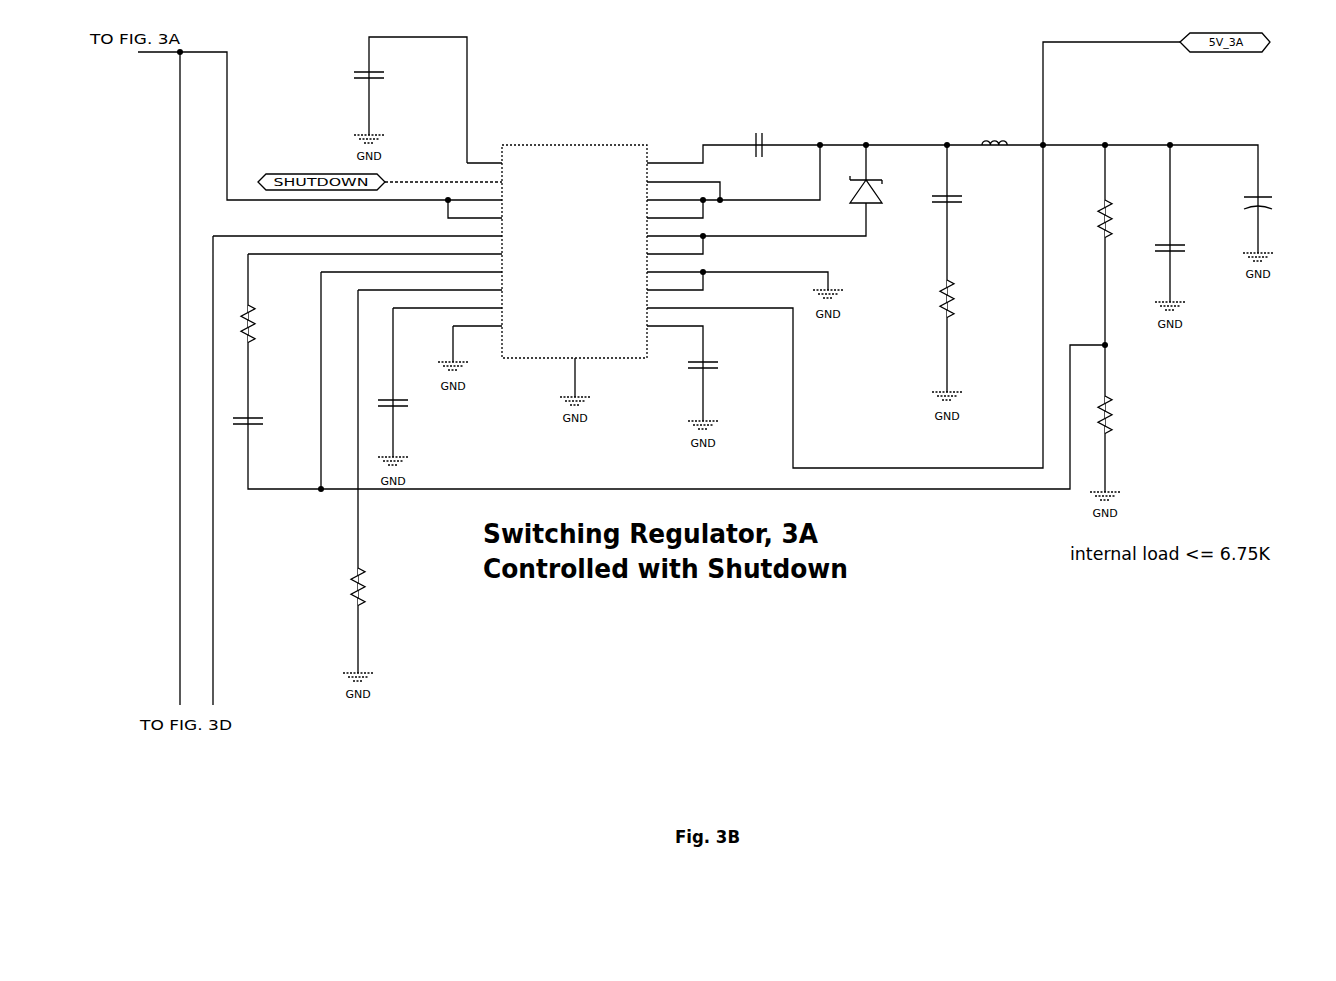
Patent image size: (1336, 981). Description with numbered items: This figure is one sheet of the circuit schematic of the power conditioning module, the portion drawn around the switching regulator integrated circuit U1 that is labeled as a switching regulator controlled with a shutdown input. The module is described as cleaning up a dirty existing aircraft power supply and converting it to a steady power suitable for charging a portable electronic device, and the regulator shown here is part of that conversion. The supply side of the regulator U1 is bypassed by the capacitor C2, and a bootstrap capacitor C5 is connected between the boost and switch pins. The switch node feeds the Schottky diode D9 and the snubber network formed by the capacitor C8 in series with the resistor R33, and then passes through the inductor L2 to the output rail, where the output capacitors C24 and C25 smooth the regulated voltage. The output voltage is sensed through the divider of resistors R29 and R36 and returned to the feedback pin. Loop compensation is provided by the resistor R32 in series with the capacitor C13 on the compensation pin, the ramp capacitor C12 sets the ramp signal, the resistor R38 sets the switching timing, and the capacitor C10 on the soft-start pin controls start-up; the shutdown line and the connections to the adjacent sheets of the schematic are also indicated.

The switching regulator IC LM5576 U1 is at (576, 263).
The VCC bypass capacitor 0.47uF C2 is at (395, 85).
The bootstrap capacitor 0.022uF C5 is at (773, 152).
The Schottky diode SOD-123 D9 is at (889, 197).
The capacitor 330pF C8 is at (970, 210).
The resistor 10 ohm R33 is at (975, 299).
The inductor 33uH L2 is at (994, 149).
The feedback resistor 5.1K R29 is at (1124, 219).
The feedback resistor 1.65K R36 is at (1126, 416).
The output capacitor 22uF C24 is at (1192, 260).
The output capacitor 39uF C25 is at (1281, 213).
The compensation resistor 51K R32 is at (266, 325).
The compensation capacitor 0.01uF C13 is at (273, 429).
The ramp capacitor 330pF C12 is at (417, 412).
The timing resistor 22K R38 is at (377, 588).
The soft-start capacitor 0.01uF C10 is at (728, 375).